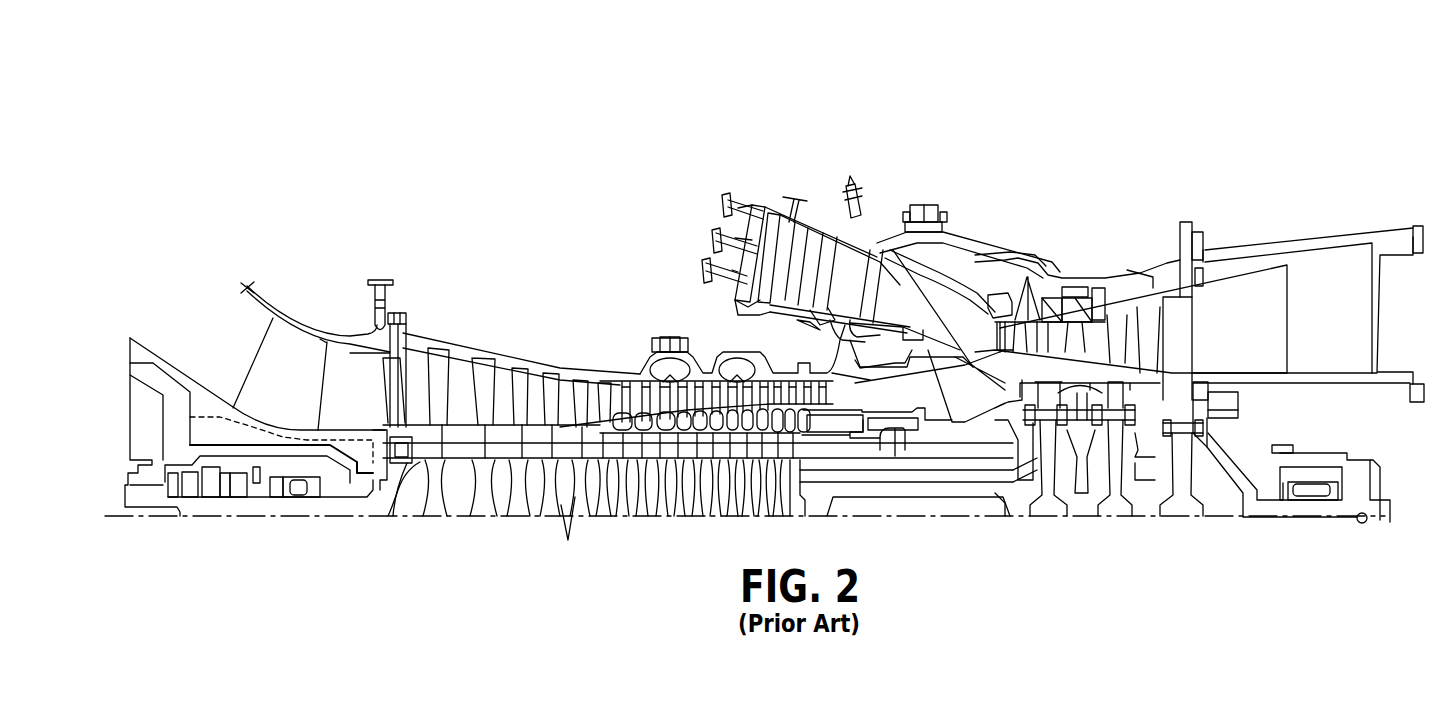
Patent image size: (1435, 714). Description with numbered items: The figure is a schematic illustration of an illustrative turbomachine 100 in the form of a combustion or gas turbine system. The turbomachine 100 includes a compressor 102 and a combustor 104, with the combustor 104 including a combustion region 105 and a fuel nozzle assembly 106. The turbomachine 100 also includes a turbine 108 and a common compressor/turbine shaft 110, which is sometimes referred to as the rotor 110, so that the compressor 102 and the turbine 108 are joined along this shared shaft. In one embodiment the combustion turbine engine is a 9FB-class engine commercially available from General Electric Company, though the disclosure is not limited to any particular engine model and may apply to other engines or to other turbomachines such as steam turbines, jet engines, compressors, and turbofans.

The turbomachine 100 is at (283, 141).
The compressor 102 is at (497, 352).
The combustor 104 is at (855, 142).
The combustion region 105 is at (841, 258).
The fuel nozzle assembly 106 is at (773, 207).
The turbine 108 is at (1167, 258).
The common compressor/turbine shaft 110 is at (392, 516).